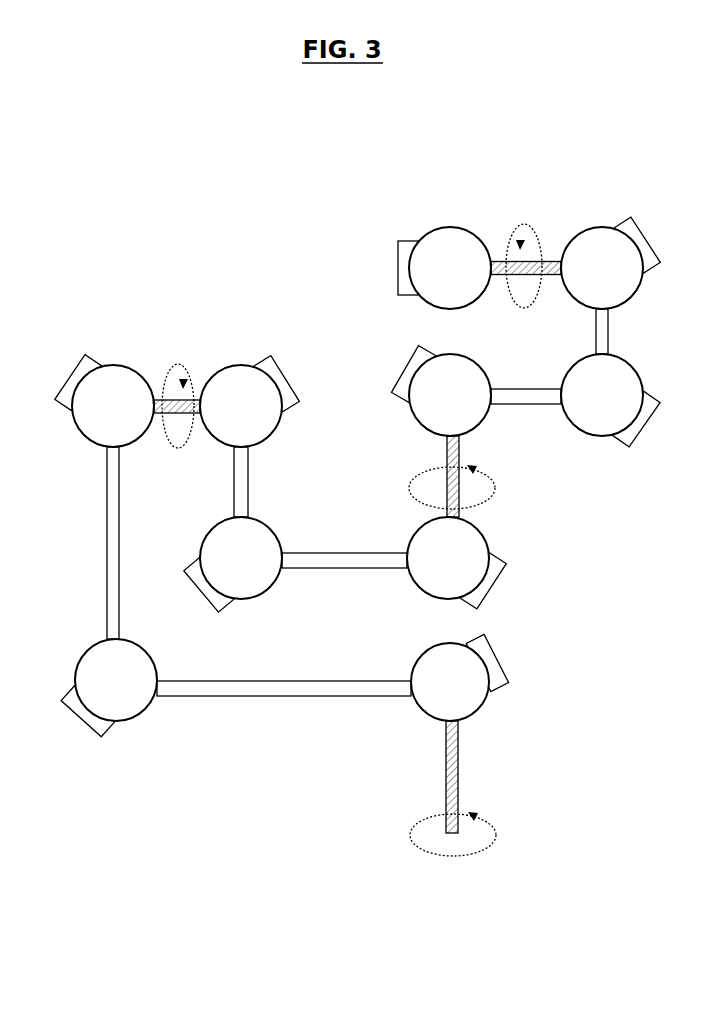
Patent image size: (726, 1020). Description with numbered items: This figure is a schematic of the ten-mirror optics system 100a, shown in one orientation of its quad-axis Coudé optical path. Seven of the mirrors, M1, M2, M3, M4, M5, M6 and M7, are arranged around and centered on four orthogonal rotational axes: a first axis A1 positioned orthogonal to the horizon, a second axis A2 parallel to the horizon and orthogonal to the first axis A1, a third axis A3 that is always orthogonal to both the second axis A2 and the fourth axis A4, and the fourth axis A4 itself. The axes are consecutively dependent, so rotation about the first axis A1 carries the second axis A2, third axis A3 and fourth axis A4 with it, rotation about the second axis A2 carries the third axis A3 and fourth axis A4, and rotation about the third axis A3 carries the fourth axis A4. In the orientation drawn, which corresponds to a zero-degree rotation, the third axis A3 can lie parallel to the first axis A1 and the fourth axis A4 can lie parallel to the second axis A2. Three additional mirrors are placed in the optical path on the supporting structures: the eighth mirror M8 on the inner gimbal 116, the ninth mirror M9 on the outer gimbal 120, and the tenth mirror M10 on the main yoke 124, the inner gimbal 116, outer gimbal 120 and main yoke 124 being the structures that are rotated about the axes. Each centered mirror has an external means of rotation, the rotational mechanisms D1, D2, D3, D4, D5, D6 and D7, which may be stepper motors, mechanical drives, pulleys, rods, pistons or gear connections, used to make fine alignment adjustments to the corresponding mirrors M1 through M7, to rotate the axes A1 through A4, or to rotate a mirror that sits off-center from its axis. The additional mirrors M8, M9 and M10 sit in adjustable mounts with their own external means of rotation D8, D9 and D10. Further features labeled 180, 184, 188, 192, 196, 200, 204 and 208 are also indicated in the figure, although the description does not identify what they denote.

The optics system 100a is at (131, 222).
The inner gimbal 116 is at (607, 326).
The outer gimbal 120 is at (362, 565).
The main yoke 124 is at (187, 696).
The first motor M1 180 is at (476, 222).
The second motor M2 184 is at (572, 222).
The joint at motor M3 188 is at (478, 442).
The joint at motor M4 192 is at (478, 517).
The motor M5 196 is at (212, 360).
The motor M6 200 is at (138, 360).
The joint at motor M7 204 is at (478, 727).
The end of shaft A1 208 is at (500, 833).
The first axis A1 is at (446, 763).
The second axis A2 is at (177, 395).
The third axis A3 is at (447, 466).
The fourth axis A4 is at (526, 255).
The rotational mechanism D1 is at (399, 272).
The rotational mechanism D2 is at (636, 251).
The rotational mechanism D3 is at (410, 364).
The rotational mechanism D4 is at (498, 591).
The rotational mechanism D5 is at (285, 375).
The rotational mechanism D6 is at (68, 373).
The rotational mechanism D7 is at (498, 664).
The external means of rotation D8 is at (645, 421).
The external means of rotation D9 is at (200, 589).
The external means of rotation D10 is at (86, 722).
The first mirror M1 is at (450, 268).
The second mirror M2 is at (602, 268).
The third mirror M3 is at (450, 395).
The fourth mirror M4 is at (448, 558).
The fifth mirror M5 is at (241, 406).
The sixth mirror M6 is at (113, 406).
The seventh mirror M7 is at (450, 682).
The eighth mirror M8 is at (602, 395).
The ninth mirror M9 is at (241, 558).
The tenth mirror M10 is at (116, 680).